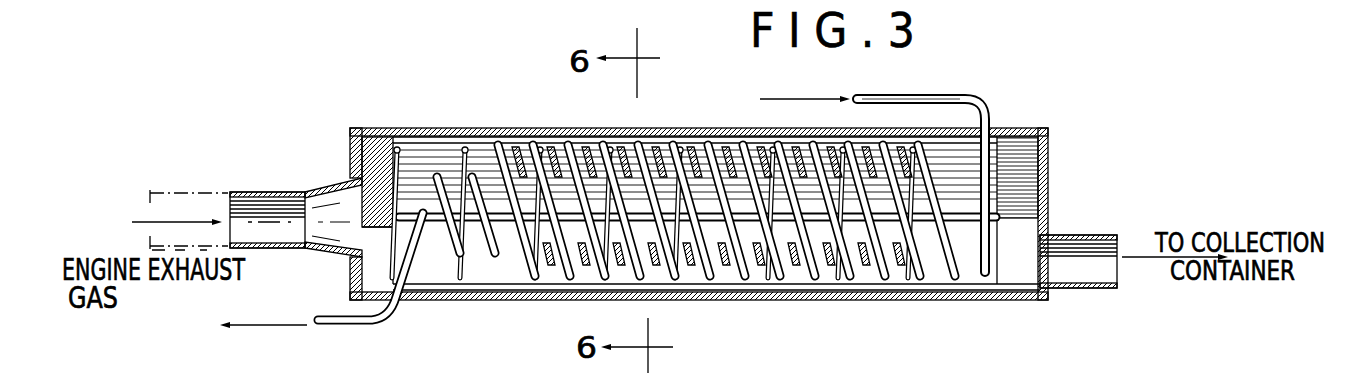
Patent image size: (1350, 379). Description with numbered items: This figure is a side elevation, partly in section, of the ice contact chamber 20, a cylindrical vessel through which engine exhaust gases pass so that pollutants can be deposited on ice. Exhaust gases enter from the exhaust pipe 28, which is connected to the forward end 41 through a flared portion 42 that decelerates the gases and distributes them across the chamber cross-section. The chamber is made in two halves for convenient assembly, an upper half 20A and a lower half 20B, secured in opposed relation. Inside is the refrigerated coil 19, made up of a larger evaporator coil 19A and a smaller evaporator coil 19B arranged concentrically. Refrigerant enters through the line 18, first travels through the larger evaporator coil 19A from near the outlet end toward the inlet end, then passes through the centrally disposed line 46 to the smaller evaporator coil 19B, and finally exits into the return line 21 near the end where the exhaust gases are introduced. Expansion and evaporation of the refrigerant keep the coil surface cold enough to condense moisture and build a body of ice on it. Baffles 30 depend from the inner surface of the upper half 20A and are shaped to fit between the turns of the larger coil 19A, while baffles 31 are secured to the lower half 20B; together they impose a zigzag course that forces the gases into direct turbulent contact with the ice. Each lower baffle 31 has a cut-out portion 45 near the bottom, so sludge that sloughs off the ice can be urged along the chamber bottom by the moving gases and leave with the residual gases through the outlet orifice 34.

The line 18 is at (899, 96).
The refrigerated coil 19 is at (772, 130).
The larger evaporator coil 19A is at (716, 312).
The smaller evaporator coil 19B is at (695, 118).
The ice contact chamber 20 is at (699, 192).
The upper half 20A is at (510, 100).
The lower half 20B is at (517, 301).
The return line 21 is at (367, 338).
The exhaust pipe 28 is at (202, 190).
The baffles 30 is at (740, 128).
The baffles 31 is at (868, 282).
The outlet orifice 34 is at (1105, 205).
The forward end 41 is at (350, 154).
The flared portion 42 is at (336, 257).
The cut-out portion 45 is at (583, 262).
The centrally disposed line 46 is at (692, 222).